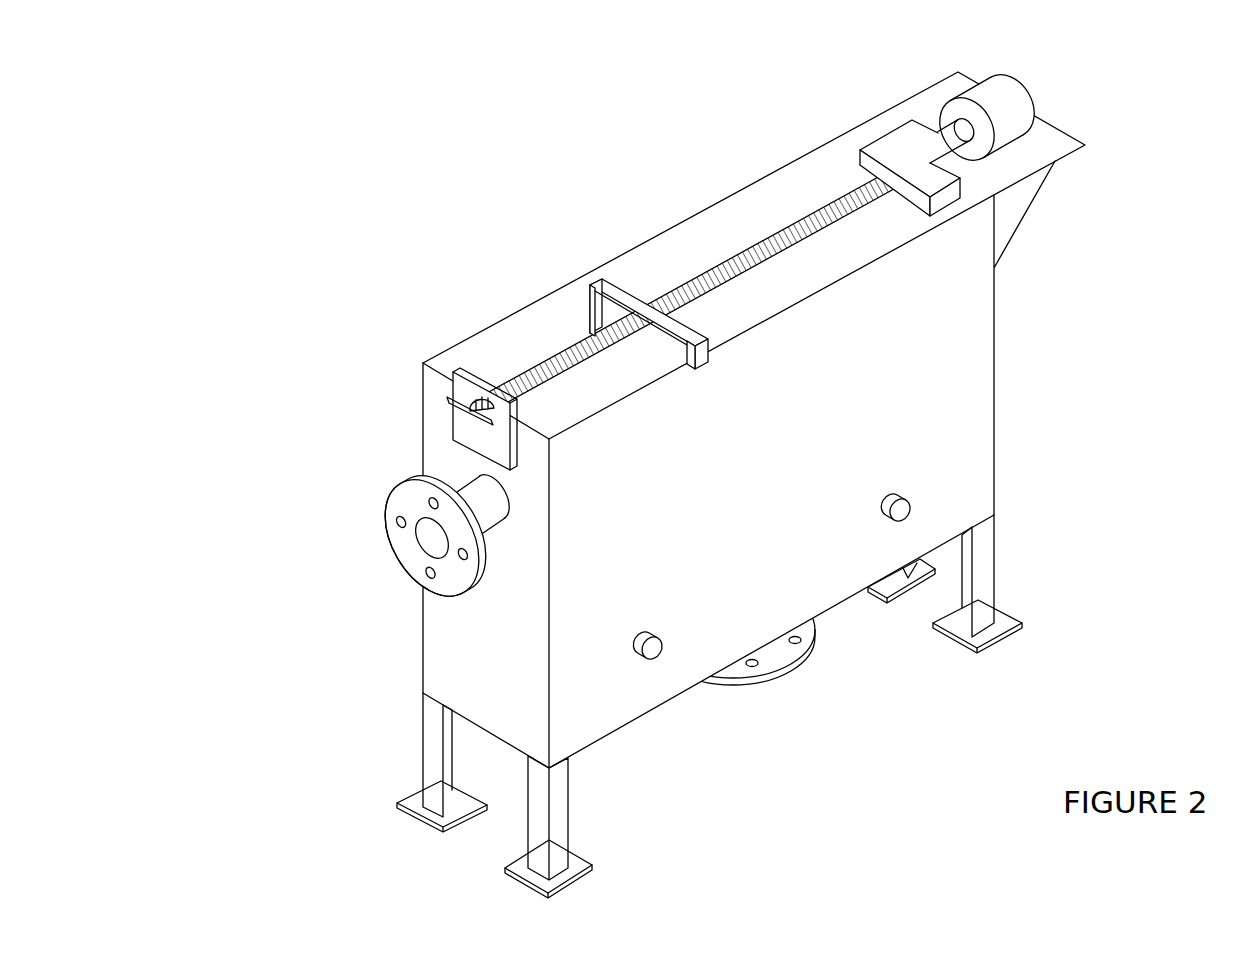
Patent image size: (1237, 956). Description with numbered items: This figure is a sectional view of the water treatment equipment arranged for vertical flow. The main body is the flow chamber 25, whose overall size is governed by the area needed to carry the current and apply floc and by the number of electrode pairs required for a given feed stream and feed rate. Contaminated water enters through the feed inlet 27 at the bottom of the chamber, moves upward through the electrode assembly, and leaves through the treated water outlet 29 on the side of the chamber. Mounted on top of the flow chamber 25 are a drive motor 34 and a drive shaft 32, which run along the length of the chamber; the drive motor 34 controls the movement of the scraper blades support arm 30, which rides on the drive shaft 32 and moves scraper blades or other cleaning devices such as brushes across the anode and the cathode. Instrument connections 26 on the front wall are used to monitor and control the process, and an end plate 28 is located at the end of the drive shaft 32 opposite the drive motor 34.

The flow chamber 25 is at (457, 650).
The instrument connections 26 is at (652, 619).
The feed inlet 27 is at (799, 684).
The end plate 28 is at (481, 370).
The treated water outlet 29 is at (380, 494).
The scraper blades support arm 30 is at (613, 284).
The drive shaft 32 is at (806, 204).
The drive motor 34 is at (1043, 92).